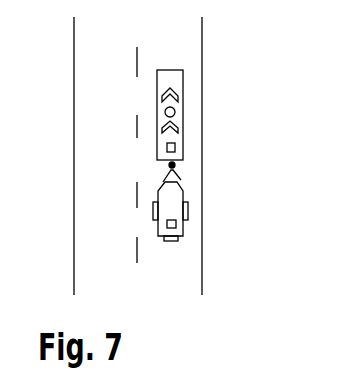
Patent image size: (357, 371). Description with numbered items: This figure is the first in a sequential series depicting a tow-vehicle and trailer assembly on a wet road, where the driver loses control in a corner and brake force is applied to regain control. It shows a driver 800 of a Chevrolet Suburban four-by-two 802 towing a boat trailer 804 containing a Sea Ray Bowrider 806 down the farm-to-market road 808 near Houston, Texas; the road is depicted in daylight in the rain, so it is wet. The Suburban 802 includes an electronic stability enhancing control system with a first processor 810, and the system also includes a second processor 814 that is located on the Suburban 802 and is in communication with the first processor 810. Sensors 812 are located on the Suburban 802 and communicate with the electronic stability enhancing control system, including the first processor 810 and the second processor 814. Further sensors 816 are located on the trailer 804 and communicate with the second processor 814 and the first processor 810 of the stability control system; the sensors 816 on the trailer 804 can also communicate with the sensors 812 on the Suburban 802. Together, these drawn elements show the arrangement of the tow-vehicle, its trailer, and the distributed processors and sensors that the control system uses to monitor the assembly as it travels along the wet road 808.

The driver 800 is at (177, 103).
The Chevrolet Suburban 4×2 802 is at (167, 145).
The boat trailer 804 is at (188, 205).
The Sea Ray Bowrider 806 is at (180, 175).
The FM 1314 808 is at (97, 105).
The first processor 810 is at (174, 93).
The sensors 812 is at (168, 166).
The second processor 814 is at (175, 120).
The sensors 816 is at (176, 225).